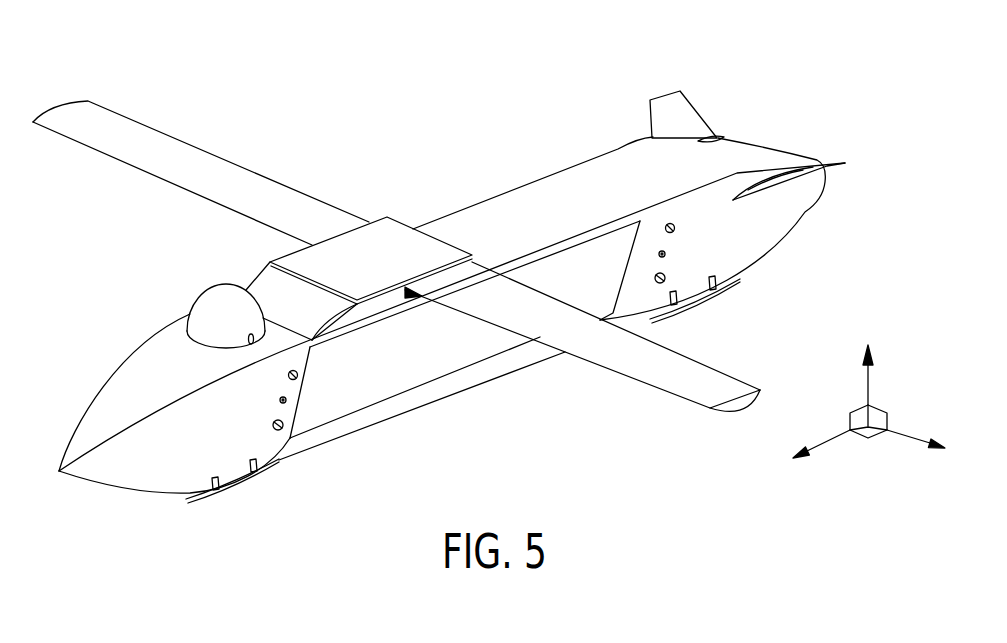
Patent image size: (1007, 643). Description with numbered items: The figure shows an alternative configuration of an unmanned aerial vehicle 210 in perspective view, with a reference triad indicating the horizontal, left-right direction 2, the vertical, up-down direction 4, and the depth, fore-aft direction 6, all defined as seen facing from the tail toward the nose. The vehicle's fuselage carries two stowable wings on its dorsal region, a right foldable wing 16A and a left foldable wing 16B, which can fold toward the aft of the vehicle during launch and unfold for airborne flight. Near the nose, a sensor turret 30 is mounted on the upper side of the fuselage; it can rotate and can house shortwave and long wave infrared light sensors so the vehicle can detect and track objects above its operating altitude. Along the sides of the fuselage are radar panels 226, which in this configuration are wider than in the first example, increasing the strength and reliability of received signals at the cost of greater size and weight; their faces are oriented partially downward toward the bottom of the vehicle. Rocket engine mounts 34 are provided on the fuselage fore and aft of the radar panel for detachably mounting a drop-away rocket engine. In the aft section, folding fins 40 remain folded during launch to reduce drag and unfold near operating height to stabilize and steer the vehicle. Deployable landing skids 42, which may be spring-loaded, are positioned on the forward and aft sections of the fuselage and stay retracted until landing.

The unmanned aerial vehicle 210 is at (178, 81).
The right foldable wing 16A is at (100, 153).
The left foldable wing 16B is at (723, 373).
The sensor turret 30 is at (191, 294).
The folding fins 40 is at (665, 92).
The deployable landing skids 42 is at (243, 487).
The radar panels 226 is at (393, 400).
The rocket engine mounts 34 is at (280, 425).
The vertical direction 4 is at (868, 392).
The depth direction 6 is at (830, 443).
The horizontal direction 2 is at (905, 440).